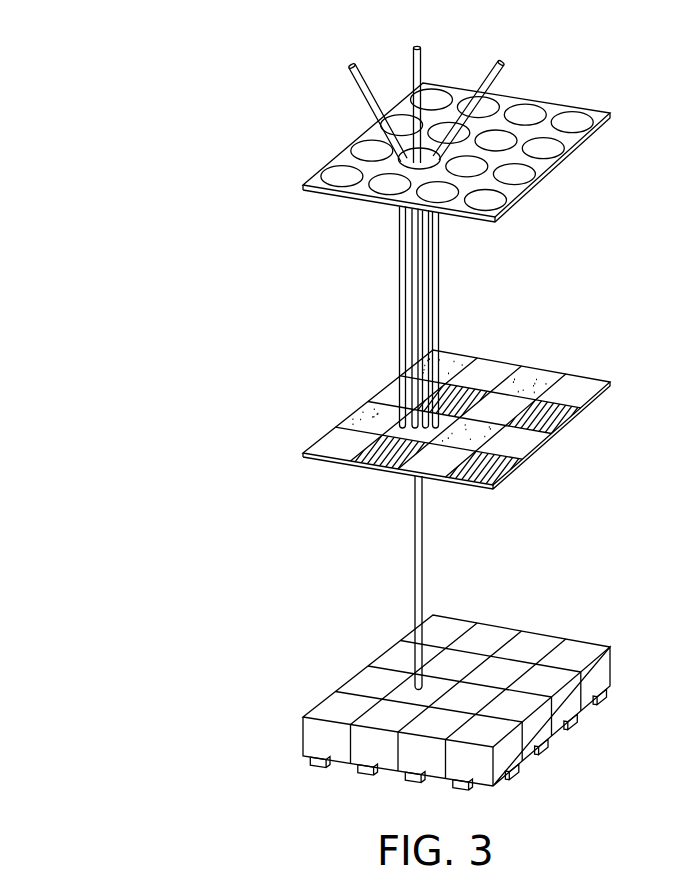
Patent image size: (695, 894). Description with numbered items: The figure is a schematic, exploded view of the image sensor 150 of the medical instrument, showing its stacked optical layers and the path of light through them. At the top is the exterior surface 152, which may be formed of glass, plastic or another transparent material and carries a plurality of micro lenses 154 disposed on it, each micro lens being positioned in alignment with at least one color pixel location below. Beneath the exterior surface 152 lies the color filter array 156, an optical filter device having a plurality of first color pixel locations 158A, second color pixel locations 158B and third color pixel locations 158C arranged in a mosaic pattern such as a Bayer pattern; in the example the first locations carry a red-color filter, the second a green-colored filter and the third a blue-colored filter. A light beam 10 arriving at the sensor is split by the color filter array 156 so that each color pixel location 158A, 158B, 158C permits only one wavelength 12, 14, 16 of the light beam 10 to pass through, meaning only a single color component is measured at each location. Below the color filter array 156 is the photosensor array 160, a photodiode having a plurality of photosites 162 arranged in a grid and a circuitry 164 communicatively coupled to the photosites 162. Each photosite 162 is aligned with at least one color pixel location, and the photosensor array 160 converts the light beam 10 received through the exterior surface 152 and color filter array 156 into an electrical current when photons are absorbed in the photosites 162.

The light beam 10 is at (330, 64).
The wavelength 12 is at (350, 64).
The wavelength 14 is at (422, 50).
The wavelength 16 is at (504, 76).
The image sensor 150 is at (130, 347).
The exterior surface 152 is at (288, 175).
The micro lenses 154 is at (503, 142).
The color filter array 156 is at (273, 427).
The first color pixel locations 158A is at (495, 470).
The second color pixel locations 158B is at (580, 392).
The third color pixel locations 158C is at (360, 416).
The photosensor array 160 is at (320, 665).
The photosites 162 is at (503, 667).
The circuitry 164 is at (308, 756).